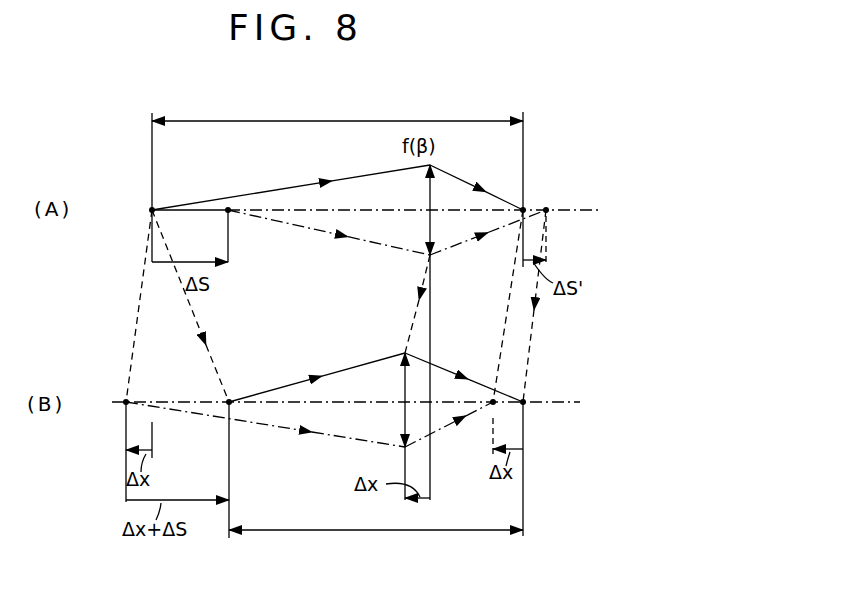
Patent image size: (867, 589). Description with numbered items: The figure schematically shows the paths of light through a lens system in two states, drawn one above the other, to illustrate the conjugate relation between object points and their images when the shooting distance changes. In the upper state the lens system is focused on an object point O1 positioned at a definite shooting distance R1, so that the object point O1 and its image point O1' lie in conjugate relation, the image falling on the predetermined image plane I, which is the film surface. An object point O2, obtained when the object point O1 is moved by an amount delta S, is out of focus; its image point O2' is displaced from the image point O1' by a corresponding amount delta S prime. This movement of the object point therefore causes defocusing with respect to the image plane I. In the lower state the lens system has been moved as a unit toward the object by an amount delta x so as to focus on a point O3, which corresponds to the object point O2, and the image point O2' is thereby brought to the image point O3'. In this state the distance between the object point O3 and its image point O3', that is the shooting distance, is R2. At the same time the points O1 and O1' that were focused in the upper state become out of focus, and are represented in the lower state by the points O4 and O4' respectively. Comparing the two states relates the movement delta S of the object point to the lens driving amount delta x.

The shooting distance R1 is at (356, 120).
The shooting distance R2 is at (346, 532).
The image plane I is at (525, 144).
The object point O1 is at (138, 214).
The object point O2 is at (213, 221).
The object point O3 is at (240, 384).
The object point O4 is at (110, 408).
The image point O1' is at (541, 194).
The image point O2' is at (569, 223).
The image point O3' is at (545, 386).
The image point O4' is at (477, 424).